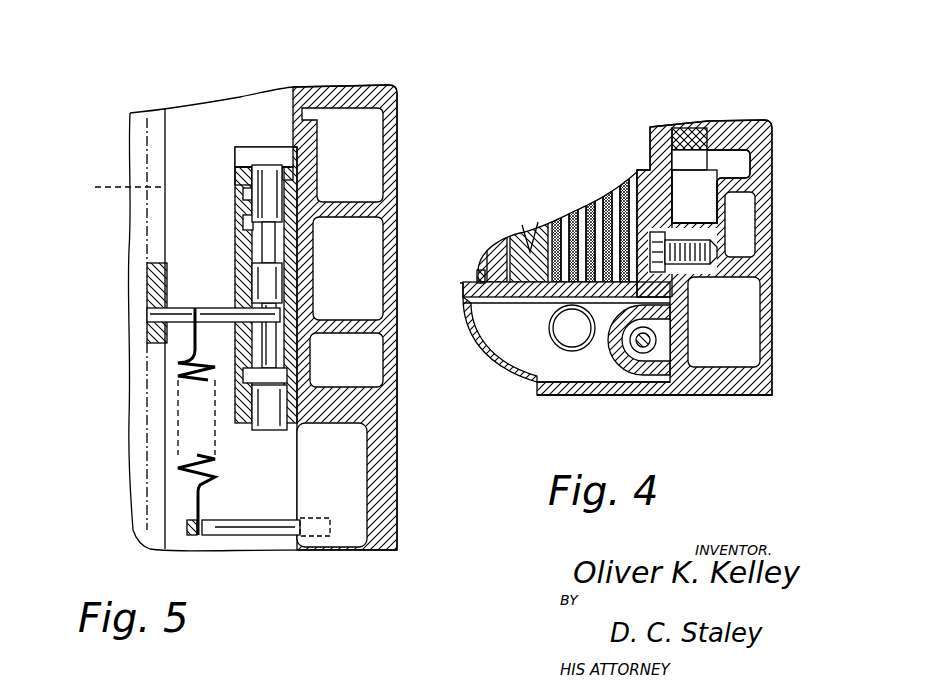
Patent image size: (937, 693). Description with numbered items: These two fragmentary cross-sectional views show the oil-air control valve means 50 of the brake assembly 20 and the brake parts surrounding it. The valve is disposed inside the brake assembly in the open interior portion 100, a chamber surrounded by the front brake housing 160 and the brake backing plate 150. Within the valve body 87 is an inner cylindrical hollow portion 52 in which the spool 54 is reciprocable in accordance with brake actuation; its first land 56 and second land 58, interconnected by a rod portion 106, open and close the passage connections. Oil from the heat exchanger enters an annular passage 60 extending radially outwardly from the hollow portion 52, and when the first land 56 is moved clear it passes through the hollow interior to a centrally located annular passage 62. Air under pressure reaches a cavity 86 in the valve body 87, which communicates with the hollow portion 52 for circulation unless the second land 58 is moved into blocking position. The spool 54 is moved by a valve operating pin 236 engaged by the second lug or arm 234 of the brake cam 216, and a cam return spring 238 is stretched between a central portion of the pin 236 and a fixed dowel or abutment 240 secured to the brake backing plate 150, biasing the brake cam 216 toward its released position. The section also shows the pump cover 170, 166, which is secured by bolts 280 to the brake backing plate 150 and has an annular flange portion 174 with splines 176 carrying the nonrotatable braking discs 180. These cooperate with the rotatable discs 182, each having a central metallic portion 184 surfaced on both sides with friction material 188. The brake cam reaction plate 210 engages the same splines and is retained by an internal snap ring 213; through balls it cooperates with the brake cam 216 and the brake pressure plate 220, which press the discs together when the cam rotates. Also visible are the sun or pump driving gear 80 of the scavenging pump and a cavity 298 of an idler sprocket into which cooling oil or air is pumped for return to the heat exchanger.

In FIG. 5, the brake assembly 20 is at (397, 87).
In FIG. 4, the brake assembly 20 is at (755, 118).
In FIG. 5, the oil-air control valve means 50 is at (233, 183).
In FIG. 4, the oil-air control valve means 50 is at (620, 373).
In FIG. 5, the inner cylindrical hollow portion 52 is at (273, 168).
In FIG. 5, the spool 54 is at (252, 273).
In FIG. 4, the spool 54 is at (657, 340).
In FIG. 5, the first land 56 is at (260, 180).
In FIG. 5, the second land 58 is at (278, 430).
In FIG. 5, the annular passage 60 is at (243, 197).
In FIG. 5, the centrally located annular passage 62 is at (243, 223).
In FIG. 4, the sun or pump driving gear 80 is at (703, 138).
In FIG. 5, the cavity 86 is at (245, 377).
In FIG. 5, the valve body 87 is at (233, 170).
In FIG. 5, the open interior portion 100 is at (175, 175).
In FIG. 4, the open interior portion 100 is at (527, 360).
In FIG. 5, the rod portion 106 is at (263, 343).
In FIG. 5, the brake backing plate 150 is at (393, 545).
In FIG. 4, the brake backing plate 150 is at (767, 232).
In FIG. 4, the front brake housing 160 is at (537, 388).
In FIG. 4, the pump cover 166 is at (662, 192).
In FIG. 4, the pump cover 170 is at (662, 132).
In FIG. 4, the annular flange portion 174 is at (468, 287).
In FIG. 4, the spline 176 is at (512, 297).
In FIG. 4, the nonrotatable braking discs 180 is at (567, 282).
In FIG. 4, the rotatable discs 182 is at (558, 227).
In FIG. 4, the central metallic portion 184 is at (627, 170).
In FIG. 4, the friction material 188 is at (603, 197).
In FIG. 4, the brake cam reaction plate 210 is at (498, 260).
In FIG. 4, the internal snap ring 213 is at (477, 283).
In FIG. 5, the brake cam 216 is at (89, 195).
In FIG. 4, the brake cam 216 is at (518, 233).
In FIG. 4, the brake pressure plate 220 is at (538, 230).
In FIG. 5, the second lug or arm 234 is at (147, 335).
In FIG. 5, the valve operating pin 236 is at (150, 313).
In FIG. 5, the cam return spring 238 is at (205, 488).
In FIG. 4, the cam return spring 238 is at (573, 351).
In FIG. 5, the fixed dowel or abutment 240 is at (288, 537).
In FIG. 4, the bolts 280 is at (657, 238).
In FIG. 4, the cavity 298 is at (683, 155).